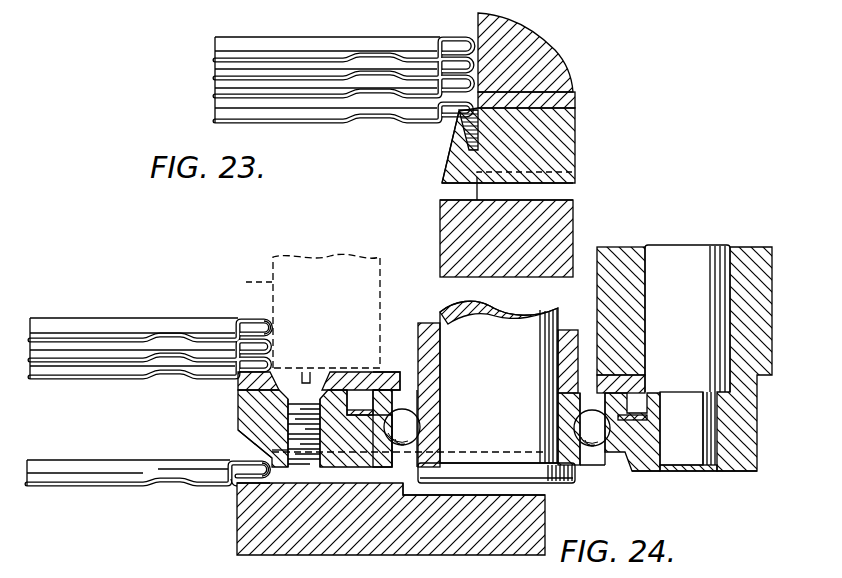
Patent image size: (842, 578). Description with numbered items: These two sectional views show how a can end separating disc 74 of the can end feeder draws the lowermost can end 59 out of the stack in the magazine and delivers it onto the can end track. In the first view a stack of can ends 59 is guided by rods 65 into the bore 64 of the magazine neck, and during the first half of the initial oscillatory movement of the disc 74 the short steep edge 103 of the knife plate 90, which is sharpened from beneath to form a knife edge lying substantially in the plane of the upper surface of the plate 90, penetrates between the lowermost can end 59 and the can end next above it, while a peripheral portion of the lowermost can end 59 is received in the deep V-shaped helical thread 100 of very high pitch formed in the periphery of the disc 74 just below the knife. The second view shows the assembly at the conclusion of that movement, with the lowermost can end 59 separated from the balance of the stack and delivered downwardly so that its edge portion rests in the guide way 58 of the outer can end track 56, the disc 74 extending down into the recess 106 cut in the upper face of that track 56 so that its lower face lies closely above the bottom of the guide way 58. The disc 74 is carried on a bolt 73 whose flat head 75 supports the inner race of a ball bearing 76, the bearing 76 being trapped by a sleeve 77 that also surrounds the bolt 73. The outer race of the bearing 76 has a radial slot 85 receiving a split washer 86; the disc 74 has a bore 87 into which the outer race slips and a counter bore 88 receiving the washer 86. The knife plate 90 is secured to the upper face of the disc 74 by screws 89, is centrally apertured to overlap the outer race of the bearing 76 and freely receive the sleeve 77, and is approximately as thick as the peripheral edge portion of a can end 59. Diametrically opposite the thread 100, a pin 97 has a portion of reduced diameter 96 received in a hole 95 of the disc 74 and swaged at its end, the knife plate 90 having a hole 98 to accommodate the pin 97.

In FIG. 23, the outer can end track 56 is at (557, 223).
In FIG. 24, the outer can end track 56 is at (391, 519).
In FIG. 23, the guide way 58 is at (448, 200).
In FIG. 24, the guide way 58 is at (242, 486).
In FIG. 23, the can end 59 is at (218, 103).
In FIG. 24, the bore 64 is at (244, 277).
In FIG. 23, the rod 65 is at (543, 68).
In FIG. 24, the rod 65 is at (312, 258).
In FIG. 24, the bolt 73 is at (541, 314).
In FIG. 23, the can end separating disc 74 is at (580, 142).
In FIG. 24, the can end separating disc 74 is at (238, 422).
In FIG. 24, the flat head 75 is at (576, 478).
In FIG. 24, the ball bearing 76 is at (613, 470).
In FIG. 24, the sleeve 77 is at (418, 336).
In FIG. 24, the radial slot 85 is at (370, 418).
In FIG. 24, the split washer 86 is at (380, 380).
In FIG. 24, the bore 87 is at (624, 455).
In FIG. 24, the counter bore 88 is at (356, 395).
In FIG. 24, the screw 89 is at (295, 376).
In FIG. 23, the knife plate 90 is at (574, 103).
In FIG. 24, the knife plate 90 is at (238, 383).
In FIG. 24, the hole 95 is at (706, 466).
In FIG. 24, the portion of reduced diameter 96 is at (685, 455).
In FIG. 24, the pin 97 is at (692, 253).
In FIG. 24, the hole 98 is at (728, 386).
In FIG. 23, the helical thread 100 is at (453, 148).
In FIG. 24, the helical thread 100 is at (240, 438).
In FIG. 23, the edge 103 is at (466, 108).
In FIG. 24, the recess 106 is at (528, 489).